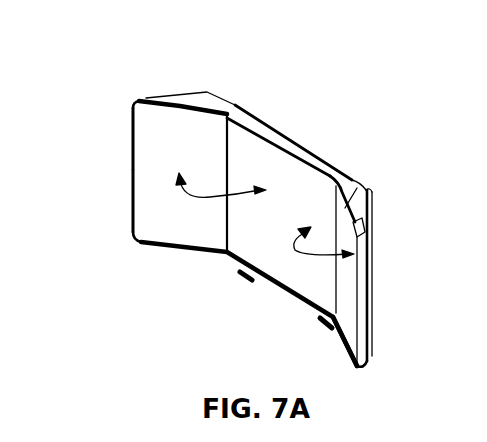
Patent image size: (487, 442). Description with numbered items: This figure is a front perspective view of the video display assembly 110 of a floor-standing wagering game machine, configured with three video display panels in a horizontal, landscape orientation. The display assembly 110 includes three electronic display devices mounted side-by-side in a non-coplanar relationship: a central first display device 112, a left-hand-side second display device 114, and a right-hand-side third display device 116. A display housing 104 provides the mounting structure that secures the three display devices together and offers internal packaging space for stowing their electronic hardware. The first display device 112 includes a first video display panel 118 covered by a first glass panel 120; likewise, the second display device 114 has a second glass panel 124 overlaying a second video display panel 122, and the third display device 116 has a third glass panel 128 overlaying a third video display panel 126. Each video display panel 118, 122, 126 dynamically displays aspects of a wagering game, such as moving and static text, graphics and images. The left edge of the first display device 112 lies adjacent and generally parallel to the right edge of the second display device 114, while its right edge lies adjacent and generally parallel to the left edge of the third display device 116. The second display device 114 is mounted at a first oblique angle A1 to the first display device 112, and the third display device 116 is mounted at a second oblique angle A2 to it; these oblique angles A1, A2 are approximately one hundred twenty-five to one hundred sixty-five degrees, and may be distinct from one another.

The video display assembly 110 is at (362, 90).
The first display device 112 is at (280, 130).
The second display device 114 is at (182, 101).
The third display device 116 is at (350, 183).
The first video display panel 118 is at (272, 256).
The first glass panel 120 is at (248, 150).
The second video display panel 122 is at (152, 207).
The second glass panel 124 is at (152, 128).
The third video display panel 126 is at (352, 321).
The third glass panel 128 is at (343, 212).
The display housing 104 is at (362, 184).
The first oblique angle A1 is at (178, 192).
The second oblique angle A2 is at (296, 256).